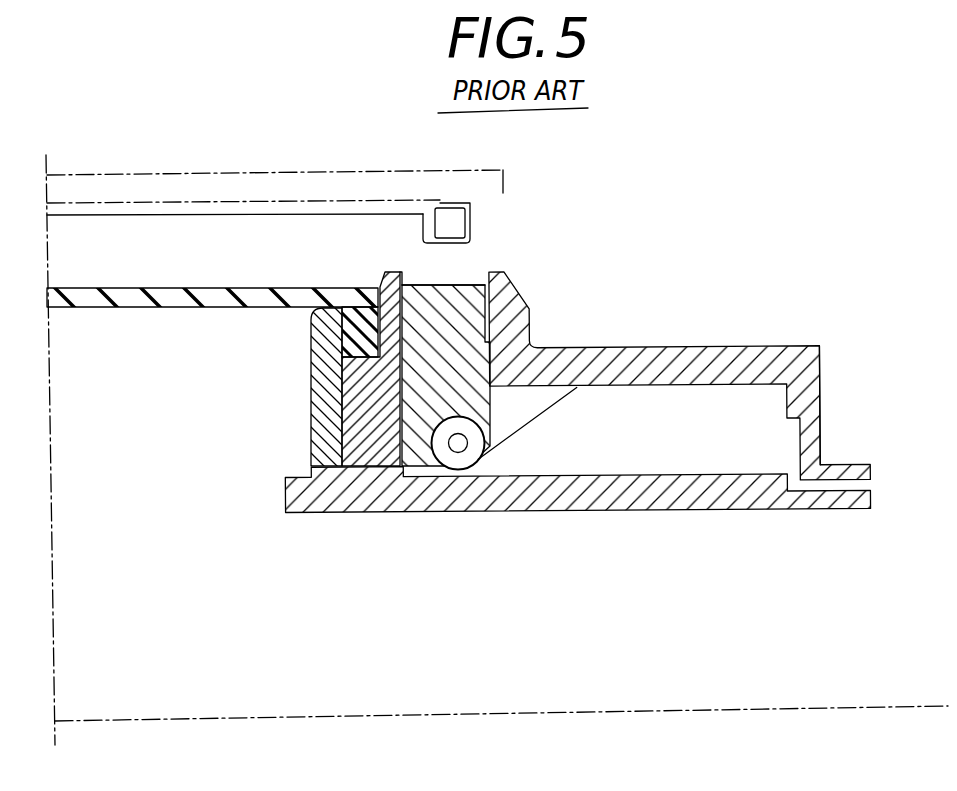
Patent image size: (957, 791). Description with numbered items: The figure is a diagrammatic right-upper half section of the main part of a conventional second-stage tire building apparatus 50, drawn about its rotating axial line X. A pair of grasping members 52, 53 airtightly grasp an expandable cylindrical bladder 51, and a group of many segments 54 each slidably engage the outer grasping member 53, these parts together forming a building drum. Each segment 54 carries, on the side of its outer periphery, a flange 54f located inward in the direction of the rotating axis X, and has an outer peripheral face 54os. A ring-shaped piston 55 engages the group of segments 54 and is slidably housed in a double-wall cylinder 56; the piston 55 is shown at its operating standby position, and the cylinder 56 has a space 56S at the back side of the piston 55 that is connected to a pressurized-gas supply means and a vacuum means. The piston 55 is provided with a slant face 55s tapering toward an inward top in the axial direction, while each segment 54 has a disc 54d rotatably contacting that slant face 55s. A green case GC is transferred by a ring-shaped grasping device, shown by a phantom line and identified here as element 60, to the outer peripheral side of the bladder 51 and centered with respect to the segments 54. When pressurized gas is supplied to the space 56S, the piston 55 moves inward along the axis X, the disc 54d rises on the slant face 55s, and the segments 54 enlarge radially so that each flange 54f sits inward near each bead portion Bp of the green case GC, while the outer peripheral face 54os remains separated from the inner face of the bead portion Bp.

The tire building apparatus 50 is at (650, 309).
The expandable cylindrical bladder 51 is at (190, 288).
The grasping member 52 is at (323, 370).
The outer grasping member 53 is at (362, 400).
The segment 54 is at (413, 422).
The flange 54f is at (410, 274).
The outer peripheral face 54os is at (450, 284).
The disc 54d is at (462, 462).
The ring-shaped piston 55 is at (727, 448).
The slant face 55s is at (527, 405).
The double-wall cylinder 56 is at (703, 358).
The space 56S is at (820, 408).
The upper panel 60 is at (252, 172).
The bead portion Bp is at (423, 237).
The green case GC is at (193, 217).
The rotating axial line X is at (737, 708).